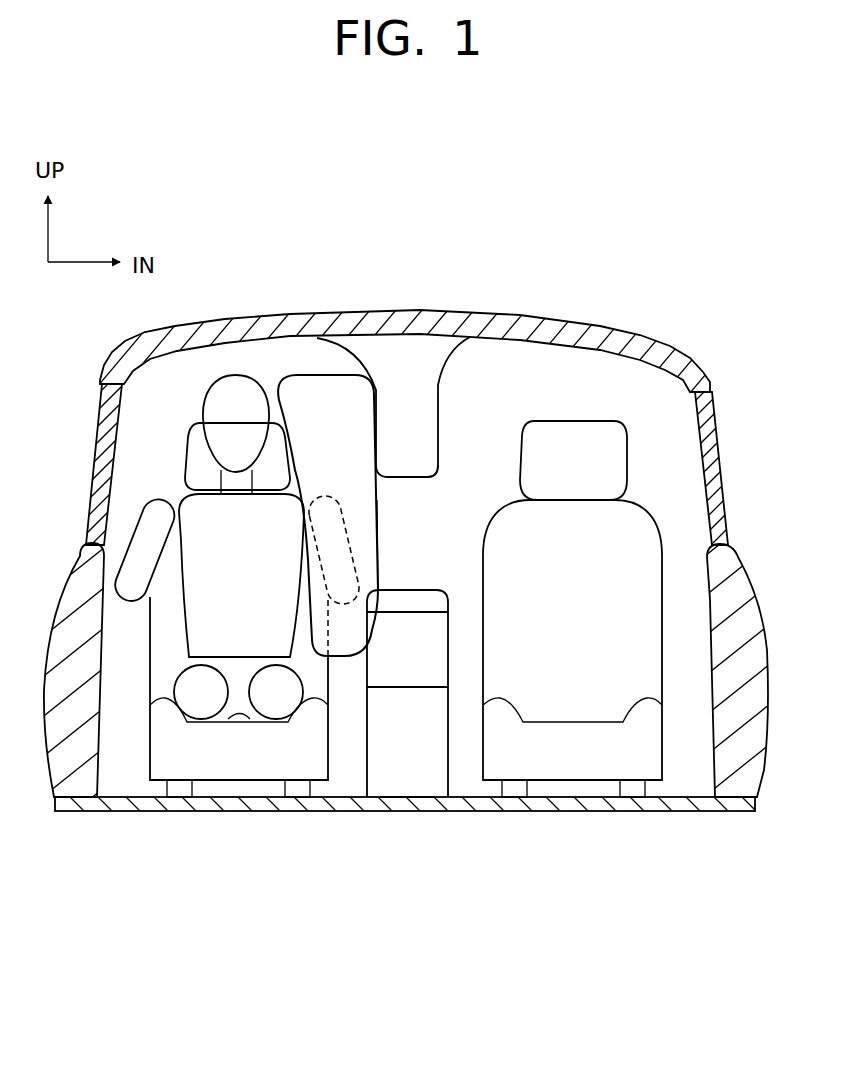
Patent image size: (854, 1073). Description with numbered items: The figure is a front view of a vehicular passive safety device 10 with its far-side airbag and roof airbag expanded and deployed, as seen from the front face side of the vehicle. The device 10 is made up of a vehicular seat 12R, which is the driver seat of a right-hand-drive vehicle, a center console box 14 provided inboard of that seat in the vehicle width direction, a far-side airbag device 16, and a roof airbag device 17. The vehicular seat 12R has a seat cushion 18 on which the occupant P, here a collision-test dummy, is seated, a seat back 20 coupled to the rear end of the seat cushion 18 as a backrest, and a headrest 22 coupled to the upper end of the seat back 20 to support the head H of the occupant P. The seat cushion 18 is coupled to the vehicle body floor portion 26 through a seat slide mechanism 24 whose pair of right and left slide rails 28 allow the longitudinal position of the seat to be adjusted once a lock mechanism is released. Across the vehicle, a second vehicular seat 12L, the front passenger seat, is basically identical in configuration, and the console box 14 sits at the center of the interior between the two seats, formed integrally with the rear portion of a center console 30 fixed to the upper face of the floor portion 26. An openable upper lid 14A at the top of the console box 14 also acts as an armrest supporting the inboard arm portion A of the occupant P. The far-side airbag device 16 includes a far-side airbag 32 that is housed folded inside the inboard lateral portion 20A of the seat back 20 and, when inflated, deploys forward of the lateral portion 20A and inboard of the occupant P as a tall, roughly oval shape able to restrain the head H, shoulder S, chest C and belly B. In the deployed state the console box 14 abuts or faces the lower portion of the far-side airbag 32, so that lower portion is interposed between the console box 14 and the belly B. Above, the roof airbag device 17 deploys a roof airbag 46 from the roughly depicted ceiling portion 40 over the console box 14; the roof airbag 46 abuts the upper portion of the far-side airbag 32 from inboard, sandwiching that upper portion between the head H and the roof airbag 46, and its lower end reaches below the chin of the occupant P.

The vehicular passive safety device 10 is at (494, 364).
The vehicular seat 12R is at (148, 681).
The vehicular seat 12L is at (664, 654).
The center console box 14 is at (450, 636).
The upper lid 14A is at (444, 593).
The far-side airbag device 16 is at (305, 373).
The roof airbag device 17 is at (442, 427).
The seat cushion 18 is at (150, 733).
The seat back 20 is at (150, 637).
The lateral portion 20A is at (330, 680).
The headrest 22 is at (187, 450).
The seat slide mechanism 24 is at (145, 790).
The vehicle body floor portion 26 is at (407, 796).
The slide rails 28 is at (175, 794).
The center console 30 is at (450, 682).
The far-side airbag 32 is at (377, 541).
The ceiling portion 40 is at (407, 309).
The roof airbag 46 is at (440, 461).
The head H is at (205, 398).
The belly B is at (200, 612).
The occupant P is at (136, 511).
The arm portion A is at (317, 570).
The chest C is at (190, 562).
The shoulder S is at (340, 510).